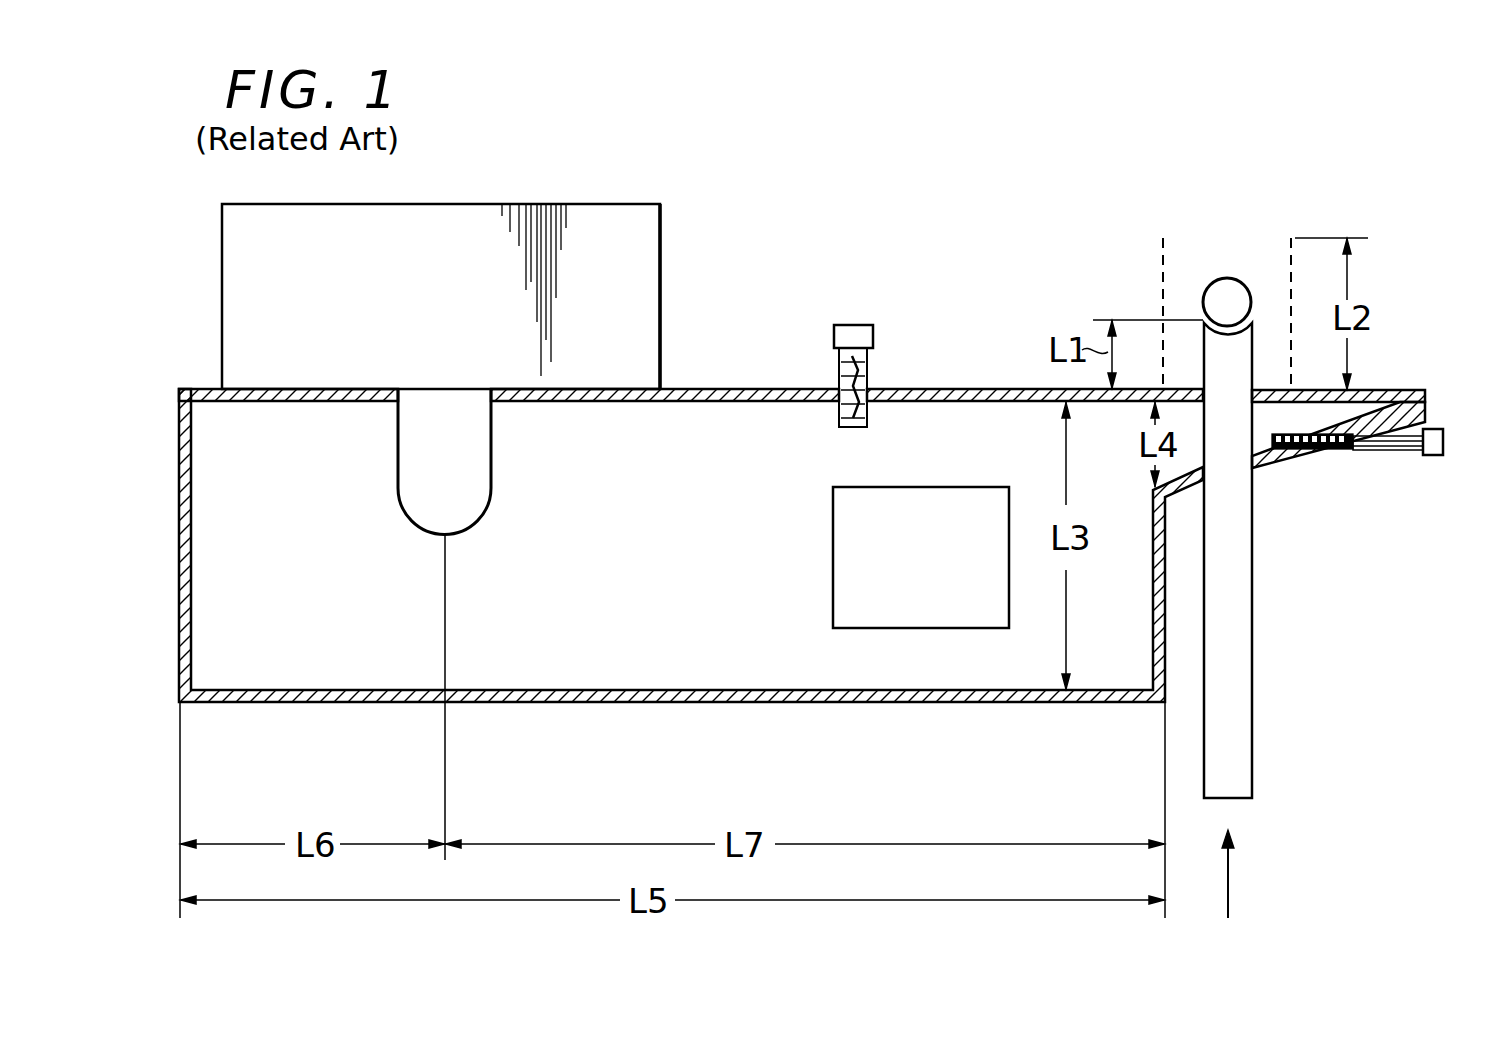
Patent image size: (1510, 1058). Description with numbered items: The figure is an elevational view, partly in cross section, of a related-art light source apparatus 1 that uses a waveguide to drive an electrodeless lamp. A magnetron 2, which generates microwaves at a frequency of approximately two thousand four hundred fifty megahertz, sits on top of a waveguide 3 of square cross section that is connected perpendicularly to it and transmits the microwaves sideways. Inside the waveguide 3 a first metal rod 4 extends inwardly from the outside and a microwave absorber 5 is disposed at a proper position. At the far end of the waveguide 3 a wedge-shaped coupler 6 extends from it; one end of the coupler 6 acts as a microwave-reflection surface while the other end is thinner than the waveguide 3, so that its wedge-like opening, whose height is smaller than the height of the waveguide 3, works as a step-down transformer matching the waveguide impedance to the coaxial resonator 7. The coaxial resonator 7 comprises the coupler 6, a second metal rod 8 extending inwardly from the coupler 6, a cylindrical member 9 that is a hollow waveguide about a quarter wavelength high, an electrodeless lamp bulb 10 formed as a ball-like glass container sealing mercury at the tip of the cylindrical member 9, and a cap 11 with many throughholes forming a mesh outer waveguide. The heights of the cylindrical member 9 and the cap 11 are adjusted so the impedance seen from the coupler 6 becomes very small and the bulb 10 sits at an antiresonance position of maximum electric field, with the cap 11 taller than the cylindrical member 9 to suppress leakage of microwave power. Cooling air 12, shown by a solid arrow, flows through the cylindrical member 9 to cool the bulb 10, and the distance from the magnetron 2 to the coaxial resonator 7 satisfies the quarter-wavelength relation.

The light source apparatus 1 is at (834, 454).
The magnetron 2 is at (597, 201).
The waveguide 3 is at (610, 703).
The first metal rod 4 is at (853, 325).
The microwave absorber 5 is at (847, 578).
The coupler 6 is at (1197, 455).
The coaxial resonator 7 is at (1370, 359).
The second metal rod 8 is at (1391, 452).
The cylindrical member 9 is at (1250, 742).
The electrodeless lamp bulb 10 is at (1229, 290).
The cap 11 is at (1160, 250).
The air 12 is at (1230, 898).